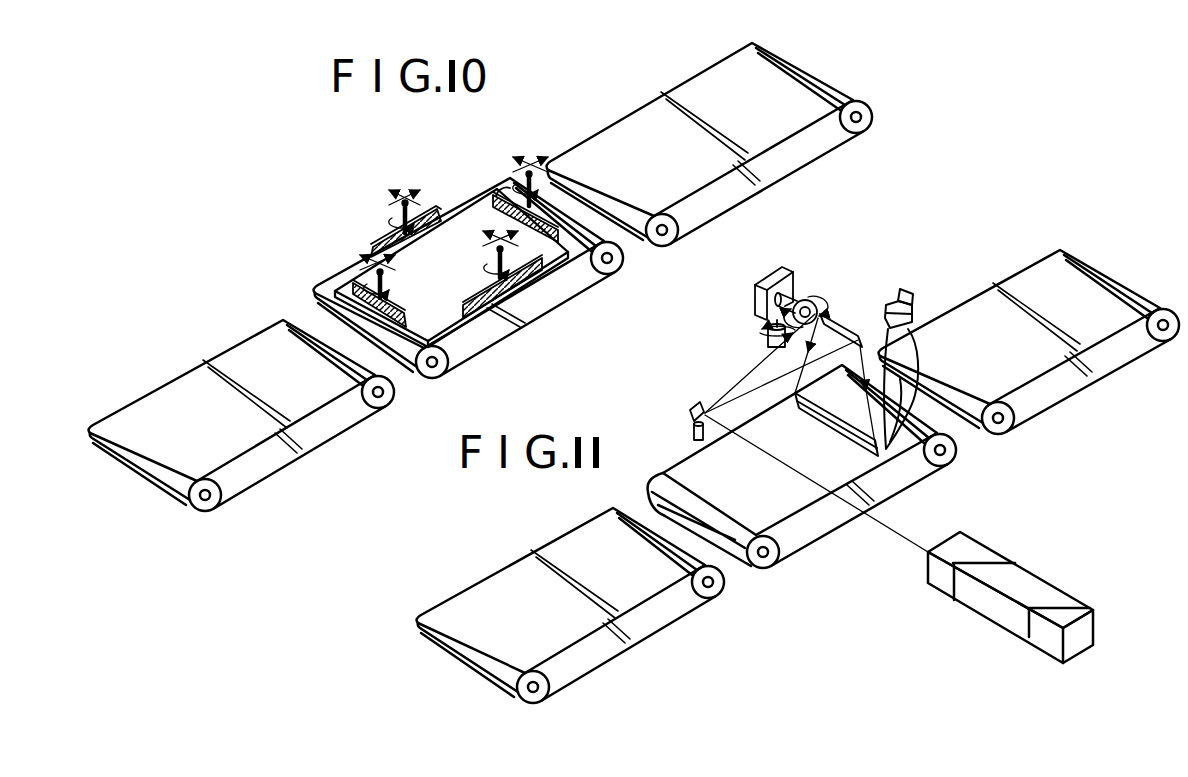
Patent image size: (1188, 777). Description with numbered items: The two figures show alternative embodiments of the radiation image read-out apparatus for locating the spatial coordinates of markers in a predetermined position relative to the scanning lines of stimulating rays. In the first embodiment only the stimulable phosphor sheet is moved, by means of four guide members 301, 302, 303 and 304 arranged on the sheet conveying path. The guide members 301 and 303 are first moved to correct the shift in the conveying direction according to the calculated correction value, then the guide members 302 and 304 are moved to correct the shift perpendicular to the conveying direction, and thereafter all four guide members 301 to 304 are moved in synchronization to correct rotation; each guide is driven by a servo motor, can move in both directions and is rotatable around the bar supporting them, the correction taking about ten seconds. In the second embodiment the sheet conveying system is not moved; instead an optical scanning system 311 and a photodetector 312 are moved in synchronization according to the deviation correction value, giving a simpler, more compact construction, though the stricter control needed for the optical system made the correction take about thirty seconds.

In FIG. 10, the guide member 301 is at (508, 183).
In FIG. 10, the guide member 302 is at (527, 278).
In FIG. 10, the guide member 303 is at (386, 296).
In FIG. 10, the guide member 304 is at (397, 224).
In FIG. 11, the optical scanning system 311 is at (841, 319).
In FIG. 11, the photodetector 312 is at (895, 364).